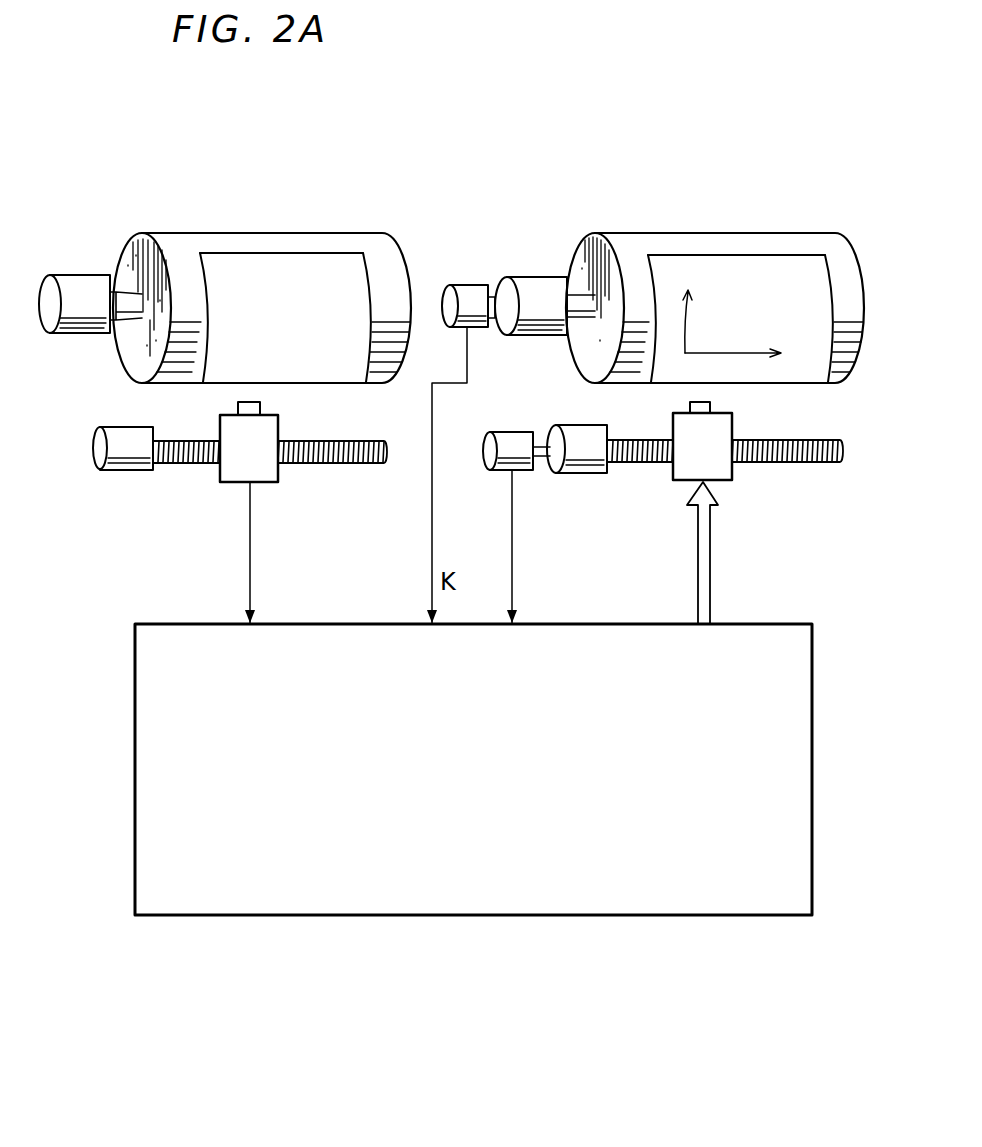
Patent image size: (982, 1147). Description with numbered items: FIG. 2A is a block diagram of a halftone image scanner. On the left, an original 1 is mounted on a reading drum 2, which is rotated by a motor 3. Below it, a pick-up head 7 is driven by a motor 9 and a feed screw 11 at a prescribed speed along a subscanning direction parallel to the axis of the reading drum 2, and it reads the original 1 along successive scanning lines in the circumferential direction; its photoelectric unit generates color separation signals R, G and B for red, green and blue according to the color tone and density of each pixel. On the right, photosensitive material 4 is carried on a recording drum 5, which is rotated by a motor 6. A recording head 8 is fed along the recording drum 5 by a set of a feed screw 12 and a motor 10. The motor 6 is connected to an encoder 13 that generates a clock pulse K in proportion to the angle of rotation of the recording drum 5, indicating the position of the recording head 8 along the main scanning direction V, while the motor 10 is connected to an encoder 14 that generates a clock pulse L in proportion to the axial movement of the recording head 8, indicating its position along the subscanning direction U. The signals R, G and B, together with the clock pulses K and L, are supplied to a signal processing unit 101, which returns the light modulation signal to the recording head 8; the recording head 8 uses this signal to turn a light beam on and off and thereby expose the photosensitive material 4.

The original 1 is at (297, 255).
The reading drum 2 is at (167, 238).
The motor 3 is at (68, 280).
The photosensitive material 4 is at (733, 273).
The recording drum 5 is at (627, 247).
The motor 6 is at (527, 287).
The pick-up head 7 is at (223, 478).
The recording head 8 is at (733, 477).
The motor 9 is at (123, 475).
The motor 10 is at (580, 473).
The feed screw 11 is at (350, 465).
The feed screw 12 is at (828, 465).
The encoder 13 is at (468, 297).
The encoder 14 is at (507, 438).
The signal processing unit 101 is at (503, 918).